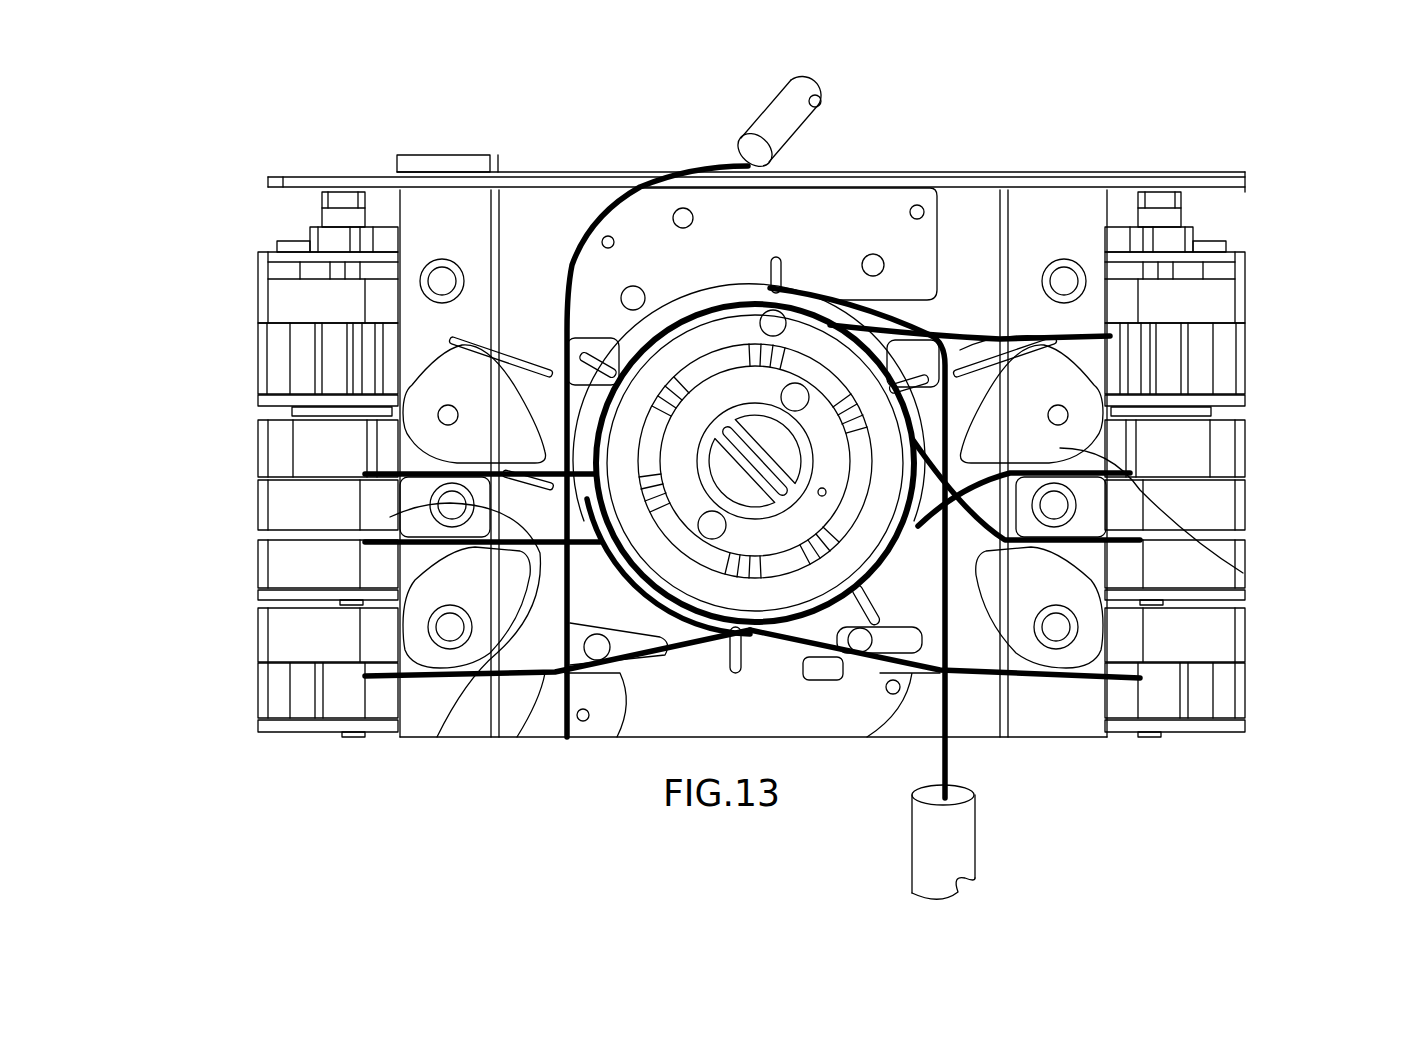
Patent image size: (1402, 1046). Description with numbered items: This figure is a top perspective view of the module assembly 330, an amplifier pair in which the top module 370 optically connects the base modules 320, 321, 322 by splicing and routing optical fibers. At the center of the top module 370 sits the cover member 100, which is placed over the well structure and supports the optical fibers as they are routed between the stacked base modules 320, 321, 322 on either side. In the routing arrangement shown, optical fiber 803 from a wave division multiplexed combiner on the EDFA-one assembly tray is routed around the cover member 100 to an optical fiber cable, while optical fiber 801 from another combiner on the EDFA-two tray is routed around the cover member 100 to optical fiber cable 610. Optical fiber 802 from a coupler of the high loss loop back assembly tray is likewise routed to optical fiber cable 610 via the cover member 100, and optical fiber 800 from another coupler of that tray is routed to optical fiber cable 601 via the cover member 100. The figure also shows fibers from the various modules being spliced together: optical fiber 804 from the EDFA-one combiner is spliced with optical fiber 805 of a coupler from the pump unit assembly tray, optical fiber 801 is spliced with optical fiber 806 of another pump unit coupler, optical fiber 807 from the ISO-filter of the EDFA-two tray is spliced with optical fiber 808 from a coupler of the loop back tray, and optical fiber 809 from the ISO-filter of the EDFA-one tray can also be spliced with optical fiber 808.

The cover member 100 is at (695, 345).
The base module 320 is at (258, 645).
The base module 321 is at (258, 497).
The base module 322 is at (258, 318).
The module assembly 330 is at (1180, 758).
The top module 370 is at (970, 240).
The optical fiber cable 601 is at (908, 833).
The optical fiber cable 610 is at (765, 105).
The optical fiber 800 is at (967, 720).
The optical fiber 801 is at (1246, 577).
The optical fiber 802 is at (513, 722).
The optical fiber 803 is at (390, 517).
The optical fiber 804 is at (443, 720).
The optical fiber 805 is at (1244, 358).
The optical fiber 806 is at (973, 340).
The optical fiber 807 is at (623, 720).
The optical fiber 808 is at (537, 447).
The optical fiber 809 is at (1246, 466).